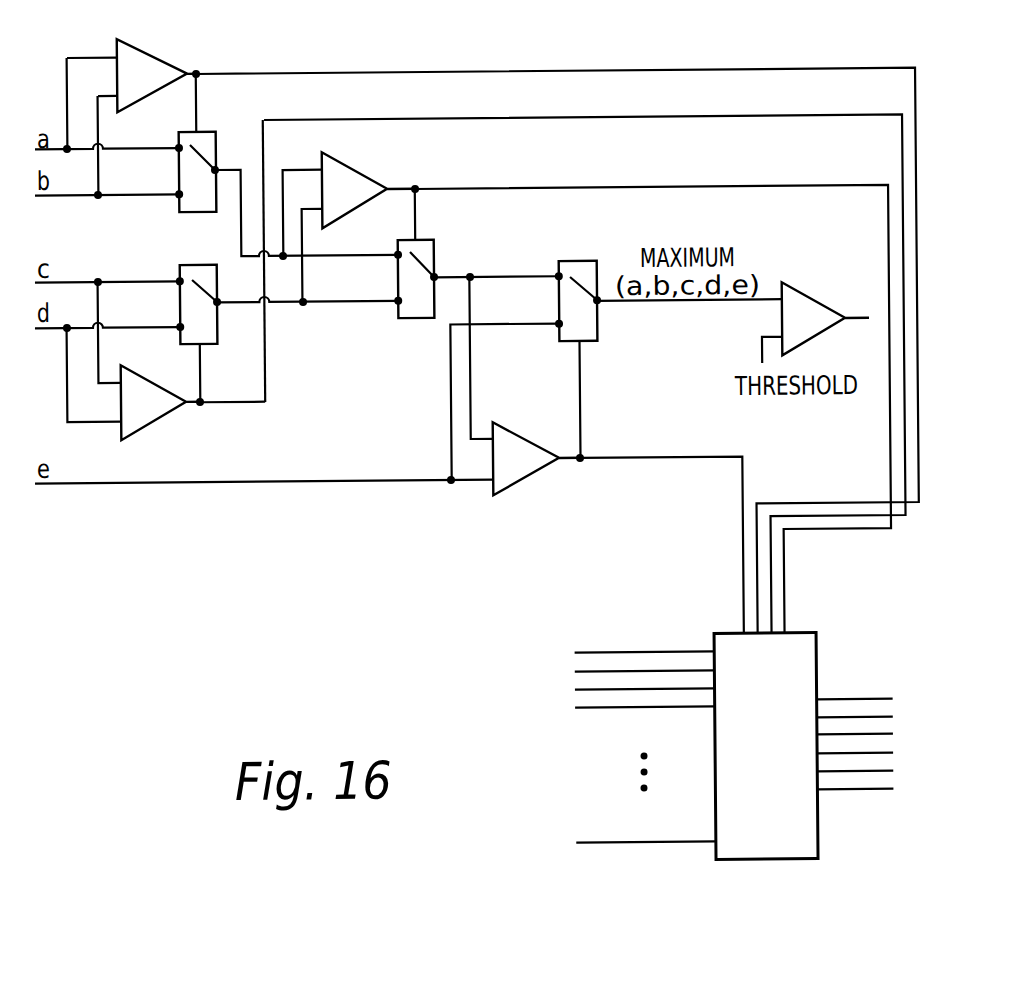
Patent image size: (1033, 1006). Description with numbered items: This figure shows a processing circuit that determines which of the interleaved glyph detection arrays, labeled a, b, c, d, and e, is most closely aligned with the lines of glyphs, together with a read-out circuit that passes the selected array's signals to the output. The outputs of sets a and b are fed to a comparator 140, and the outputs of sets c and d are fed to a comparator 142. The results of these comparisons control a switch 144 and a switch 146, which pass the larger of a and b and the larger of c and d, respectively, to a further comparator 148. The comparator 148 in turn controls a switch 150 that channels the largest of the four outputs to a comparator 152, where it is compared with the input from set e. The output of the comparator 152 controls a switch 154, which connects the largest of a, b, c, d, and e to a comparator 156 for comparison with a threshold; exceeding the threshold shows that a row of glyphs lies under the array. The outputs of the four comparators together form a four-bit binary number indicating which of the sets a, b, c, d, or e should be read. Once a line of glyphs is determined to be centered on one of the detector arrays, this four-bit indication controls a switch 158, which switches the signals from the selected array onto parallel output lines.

The comparator 140 is at (148, 54).
The comparator 142 is at (151, 424).
The switch 144 is at (215, 150).
The switch 146 is at (196, 267).
The comparator 148 is at (357, 168).
The switch 150 is at (432, 261).
The comparator 152 is at (523, 483).
The switch 154 is at (594, 325).
The comparator 156 is at (818, 299).
The switch 158 is at (811, 667).